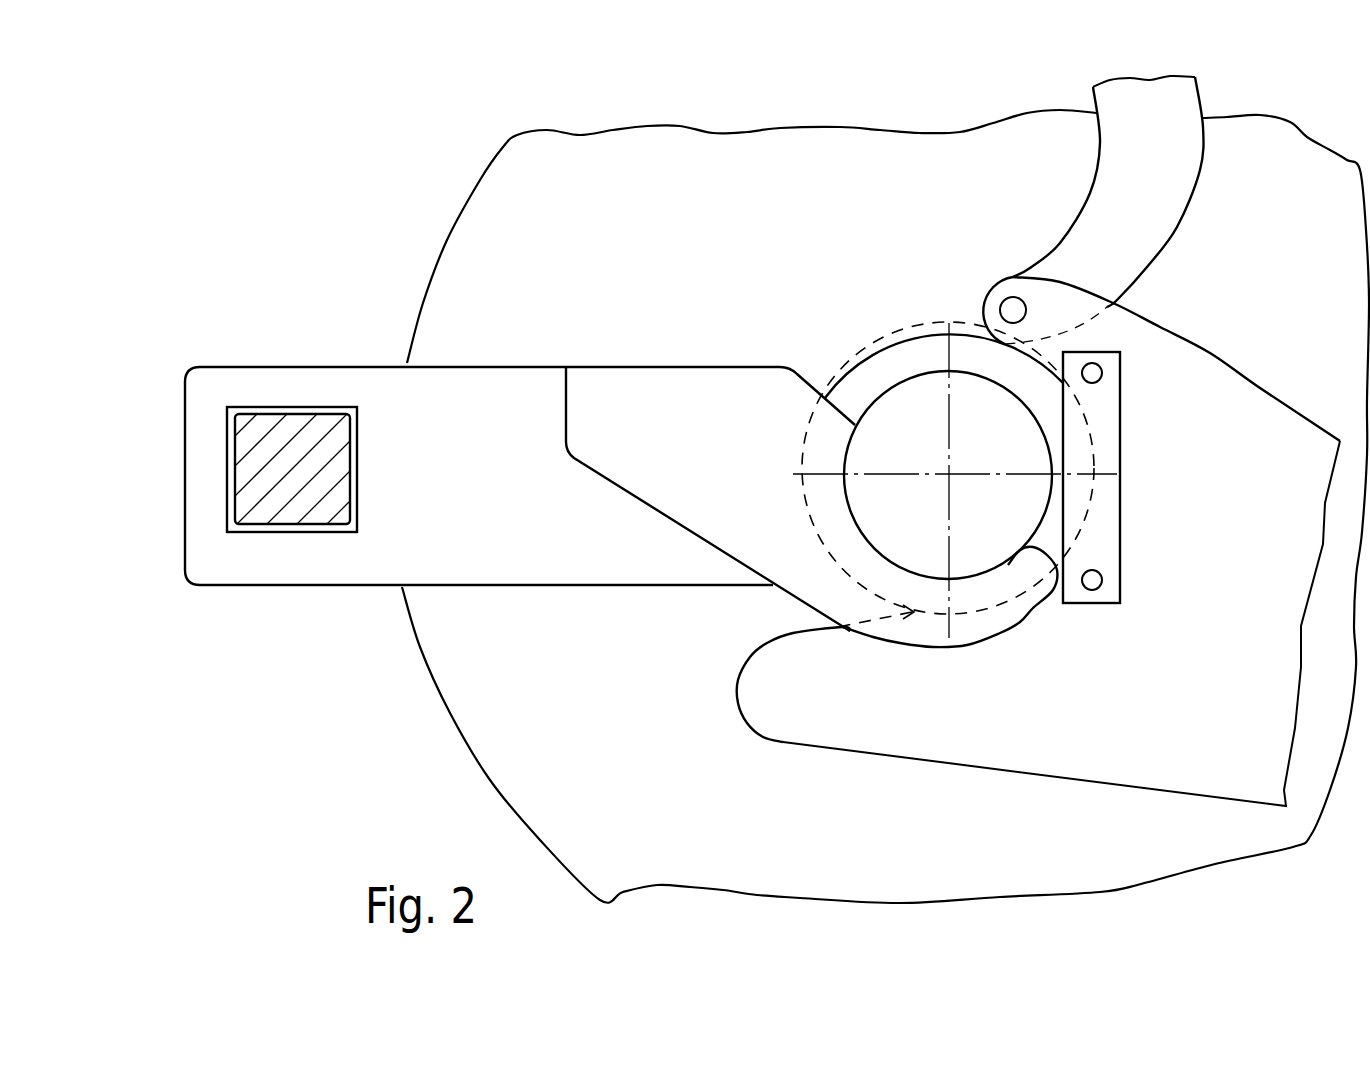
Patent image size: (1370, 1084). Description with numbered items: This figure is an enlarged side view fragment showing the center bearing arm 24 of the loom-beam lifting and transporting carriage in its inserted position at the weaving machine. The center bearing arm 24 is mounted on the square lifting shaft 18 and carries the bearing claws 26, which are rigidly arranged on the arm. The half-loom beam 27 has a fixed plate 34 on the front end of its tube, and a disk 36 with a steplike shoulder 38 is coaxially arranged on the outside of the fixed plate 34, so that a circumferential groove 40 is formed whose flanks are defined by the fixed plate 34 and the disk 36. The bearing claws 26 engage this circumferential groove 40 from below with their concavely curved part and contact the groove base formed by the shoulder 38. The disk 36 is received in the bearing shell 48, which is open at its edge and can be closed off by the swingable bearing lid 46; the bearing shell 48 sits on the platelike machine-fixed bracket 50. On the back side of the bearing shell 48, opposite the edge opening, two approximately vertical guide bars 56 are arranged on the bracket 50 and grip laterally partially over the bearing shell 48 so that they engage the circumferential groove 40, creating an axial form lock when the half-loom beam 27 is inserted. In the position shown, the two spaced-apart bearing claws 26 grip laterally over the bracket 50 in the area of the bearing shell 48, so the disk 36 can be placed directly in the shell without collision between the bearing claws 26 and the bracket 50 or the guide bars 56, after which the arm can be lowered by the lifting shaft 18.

The lifting shaft 18 is at (302, 453).
The center bearing arm 24 is at (490, 405).
The bearing claws 26 is at (1030, 612).
The half-loom beams 27 is at (749, 205).
The fixed plate 34 is at (643, 207).
The disk 36 is at (878, 375).
The steplike shoulder 38 is at (973, 387).
The circumferential groove 40 is at (917, 367).
The swingable bearing lid 46 is at (1153, 212).
The bearing shell 48 is at (960, 612).
The bracket 50 is at (1173, 388).
The guide bars 56 is at (1108, 433).